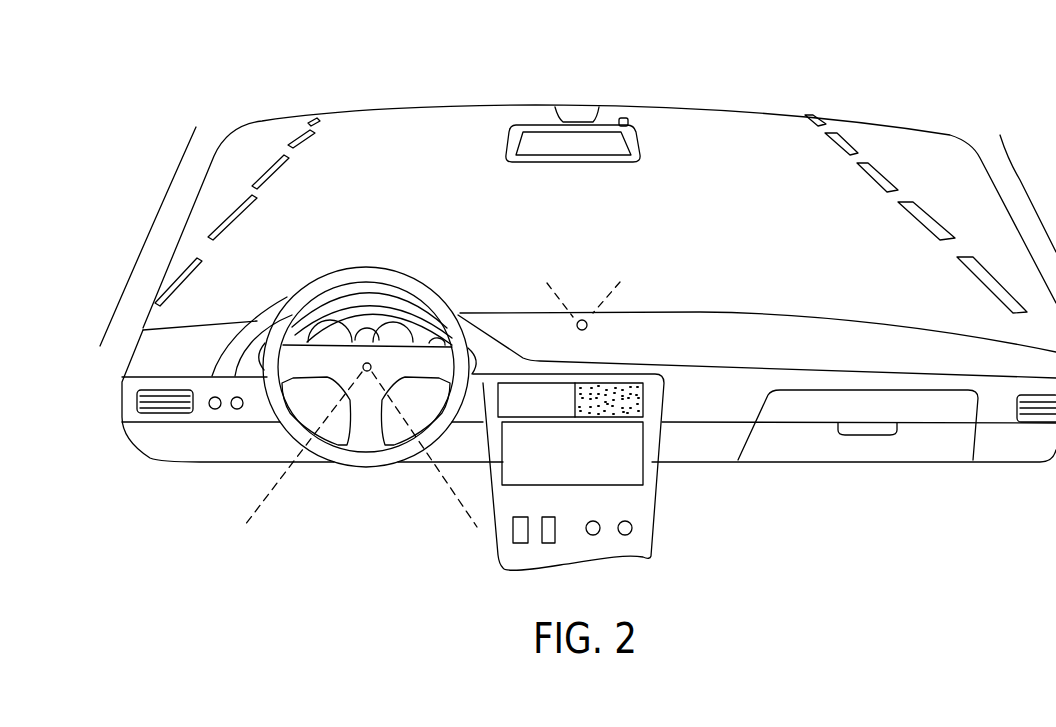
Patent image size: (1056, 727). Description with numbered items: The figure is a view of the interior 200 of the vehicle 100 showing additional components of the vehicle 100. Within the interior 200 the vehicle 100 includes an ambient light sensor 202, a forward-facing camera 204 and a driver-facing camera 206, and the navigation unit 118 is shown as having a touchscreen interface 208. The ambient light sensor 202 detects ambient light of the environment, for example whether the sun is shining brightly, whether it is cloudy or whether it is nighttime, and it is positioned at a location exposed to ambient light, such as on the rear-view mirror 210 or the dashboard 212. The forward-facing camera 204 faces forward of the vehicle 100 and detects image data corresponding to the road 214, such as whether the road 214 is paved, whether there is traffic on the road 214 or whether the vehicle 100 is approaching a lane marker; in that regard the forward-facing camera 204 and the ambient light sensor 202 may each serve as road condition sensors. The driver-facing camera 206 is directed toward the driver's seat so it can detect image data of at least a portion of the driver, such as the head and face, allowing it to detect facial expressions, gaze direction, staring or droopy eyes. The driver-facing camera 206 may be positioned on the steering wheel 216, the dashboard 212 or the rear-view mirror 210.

The vehicle 100 is at (838, 88).
The navigation unit 118 is at (643, 452).
The interior 200 is at (146, 500).
The ambient light sensor 202 is at (628, 120).
The forward-facing camera 204 is at (588, 328).
The driver-facing camera 206 is at (367, 363).
The touchscreen interface 208 is at (557, 478).
The rear-view mirror 210 is at (516, 164).
The dashboard 212 is at (653, 322).
The road 214 is at (757, 183).
The steering wheel 216 is at (345, 268).